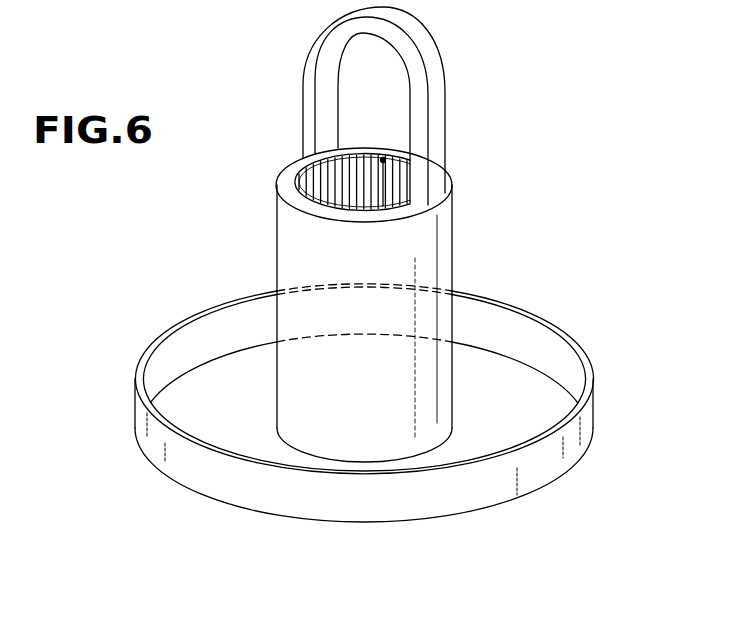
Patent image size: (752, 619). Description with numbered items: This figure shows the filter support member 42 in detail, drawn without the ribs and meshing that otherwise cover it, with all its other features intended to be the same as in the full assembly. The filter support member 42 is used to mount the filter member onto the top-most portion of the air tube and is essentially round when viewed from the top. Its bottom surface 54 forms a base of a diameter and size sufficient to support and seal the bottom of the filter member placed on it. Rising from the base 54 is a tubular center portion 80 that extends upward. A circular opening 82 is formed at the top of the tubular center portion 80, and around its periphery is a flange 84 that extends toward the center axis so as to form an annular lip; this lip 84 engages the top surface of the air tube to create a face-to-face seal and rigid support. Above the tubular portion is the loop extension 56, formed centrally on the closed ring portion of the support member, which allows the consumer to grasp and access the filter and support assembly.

The filter support member 42 is at (386, 393).
The bottom surface 54 is at (517, 500).
The loop extension 56 is at (445, 93).
The tubular center portion 80 is at (288, 249).
The circular opening 82 is at (335, 173).
The flange 84 is at (383, 158).